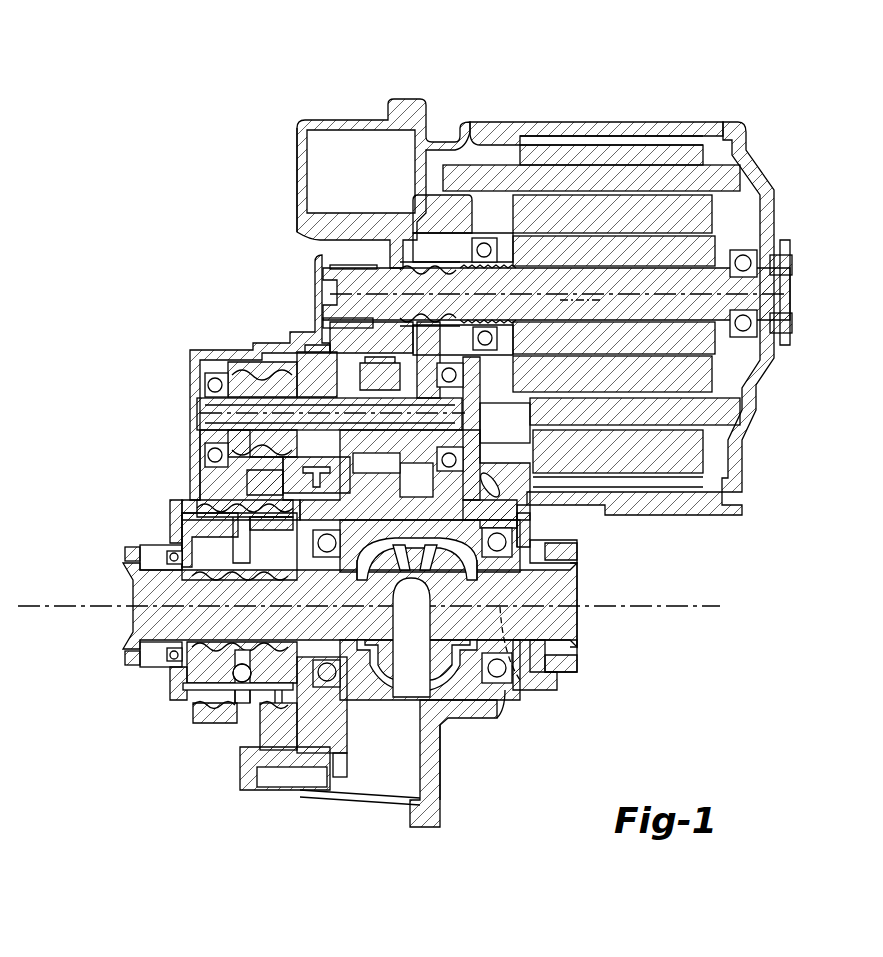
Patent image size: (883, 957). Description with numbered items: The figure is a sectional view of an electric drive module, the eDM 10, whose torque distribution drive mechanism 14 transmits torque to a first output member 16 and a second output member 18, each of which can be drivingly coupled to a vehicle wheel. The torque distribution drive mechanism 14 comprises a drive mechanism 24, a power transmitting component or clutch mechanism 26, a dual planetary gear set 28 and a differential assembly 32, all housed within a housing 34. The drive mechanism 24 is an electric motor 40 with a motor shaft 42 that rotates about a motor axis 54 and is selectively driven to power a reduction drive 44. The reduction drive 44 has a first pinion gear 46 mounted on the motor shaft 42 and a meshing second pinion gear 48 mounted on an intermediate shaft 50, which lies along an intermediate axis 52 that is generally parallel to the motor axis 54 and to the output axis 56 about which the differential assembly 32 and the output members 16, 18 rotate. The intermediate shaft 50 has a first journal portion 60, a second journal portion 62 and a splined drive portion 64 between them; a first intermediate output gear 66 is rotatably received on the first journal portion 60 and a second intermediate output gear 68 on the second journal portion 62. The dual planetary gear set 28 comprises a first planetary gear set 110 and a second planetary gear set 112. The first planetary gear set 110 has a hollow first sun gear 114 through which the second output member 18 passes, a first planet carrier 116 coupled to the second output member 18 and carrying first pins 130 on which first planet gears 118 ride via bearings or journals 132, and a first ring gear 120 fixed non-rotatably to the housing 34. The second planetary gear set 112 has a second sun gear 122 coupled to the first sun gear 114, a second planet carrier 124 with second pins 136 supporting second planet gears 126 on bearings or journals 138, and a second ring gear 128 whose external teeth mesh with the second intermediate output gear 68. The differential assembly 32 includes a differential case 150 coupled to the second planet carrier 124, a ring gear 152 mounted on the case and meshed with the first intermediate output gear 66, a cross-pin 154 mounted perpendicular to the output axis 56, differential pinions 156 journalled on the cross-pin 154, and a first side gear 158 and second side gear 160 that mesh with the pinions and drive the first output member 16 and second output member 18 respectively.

The eDM 10 is at (240, 178).
The torque distribution drive mechanism 14 is at (607, 116).
The first output member 16 is at (552, 632).
The second output member 18 is at (152, 625).
The drive mechanism 24 is at (702, 215).
The clutch mechanism 26 is at (302, 347).
The dual planetary gear set 28 is at (188, 527).
The differential assembly 32 is at (466, 686).
The housing 34 is at (428, 110).
The electric motor 40 is at (700, 372).
The motor shaft 42 is at (727, 288).
The reduction drive 44 is at (207, 228).
The first pinion gear 46 is at (423, 277).
The second pinion gear 48 is at (397, 325).
The intermediate shaft 50 is at (250, 401).
The intermediate axis 52 is at (247, 418).
The motor axis 54 is at (571, 294).
The output axis 56 is at (520, 680).
The first journal portion 60 is at (367, 435).
The second journal portion 62 is at (267, 435).
The drive portion 64 is at (325, 386).
The first intermediate output gear 66 is at (373, 455).
The second intermediate output gear 68 is at (252, 378).
The first planetary gear set 110 is at (204, 722).
The second planetary gear set 112 is at (273, 709).
The first sun gear 114 is at (233, 573).
The first planet carrier 116 is at (147, 542).
The first planet gears 118 is at (155, 670).
The first ring gear 120 is at (200, 713).
The second sun gear 122 is at (198, 708).
The second planet carrier 124 is at (272, 530).
The second planet gears 126 is at (322, 717).
The second ring gear 128 is at (270, 488).
The first pins 130 is at (193, 675).
The bearings or journals 132 is at (238, 672).
The second pins 136 is at (263, 677).
The bearings or journals 138 is at (285, 688).
The differential case 150 is at (453, 537).
The ring gear 152 is at (462, 483).
The cross-pin 154 is at (408, 682).
The differential pinions 156 is at (388, 662).
The first side gear 158 is at (453, 577).
The second side gear 160 is at (367, 577).